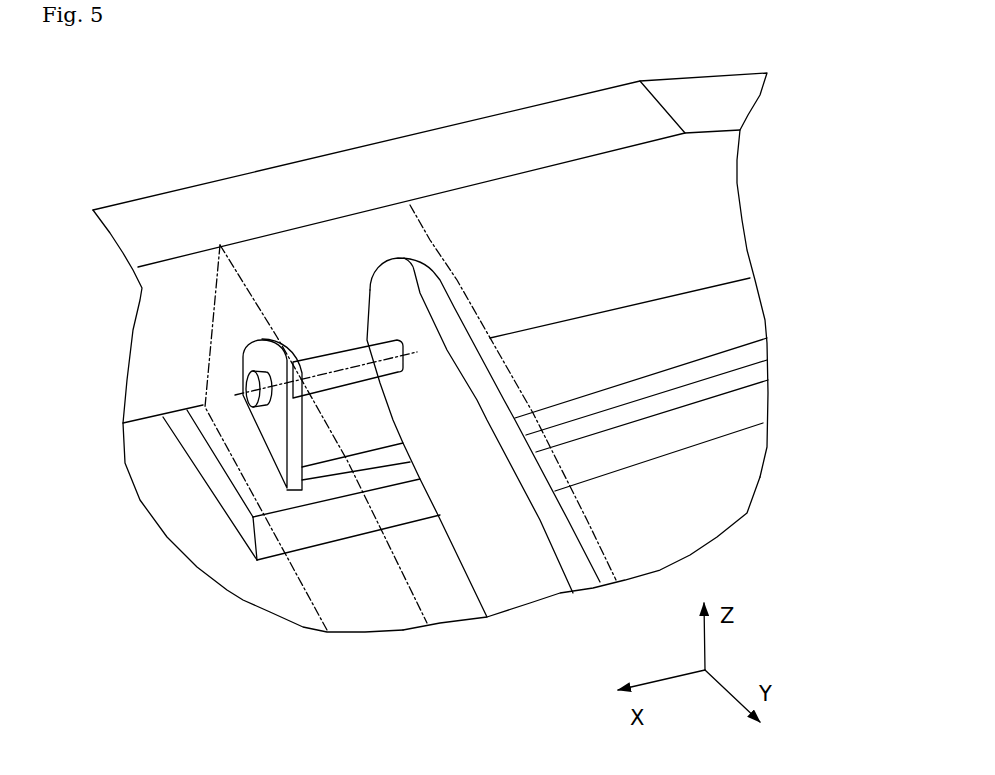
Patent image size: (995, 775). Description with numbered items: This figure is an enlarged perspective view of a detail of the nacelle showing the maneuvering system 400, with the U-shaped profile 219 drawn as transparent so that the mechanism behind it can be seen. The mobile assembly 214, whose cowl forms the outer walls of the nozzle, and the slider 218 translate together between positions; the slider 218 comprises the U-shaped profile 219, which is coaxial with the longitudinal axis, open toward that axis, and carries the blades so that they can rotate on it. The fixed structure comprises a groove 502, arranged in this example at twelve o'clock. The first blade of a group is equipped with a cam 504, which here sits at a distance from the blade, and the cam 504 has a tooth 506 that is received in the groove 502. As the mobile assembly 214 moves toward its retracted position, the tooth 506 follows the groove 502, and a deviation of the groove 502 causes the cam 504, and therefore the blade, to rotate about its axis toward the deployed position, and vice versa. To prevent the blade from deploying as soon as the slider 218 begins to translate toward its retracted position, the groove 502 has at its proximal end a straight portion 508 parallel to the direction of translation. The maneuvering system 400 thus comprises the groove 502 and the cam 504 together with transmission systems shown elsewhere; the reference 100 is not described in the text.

The vehicle body panel 100 is at (763, 165).
The mobile assembly 214 is at (233, 148).
The slider 218 is at (733, 537).
The U-shaped profile 219 is at (233, 290).
The maneuvering system 400 is at (330, 658).
The groove 502 is at (662, 383).
The cam 504 is at (273, 428).
The tooth 506 is at (287, 483).
The straight portion 508 is at (320, 470).